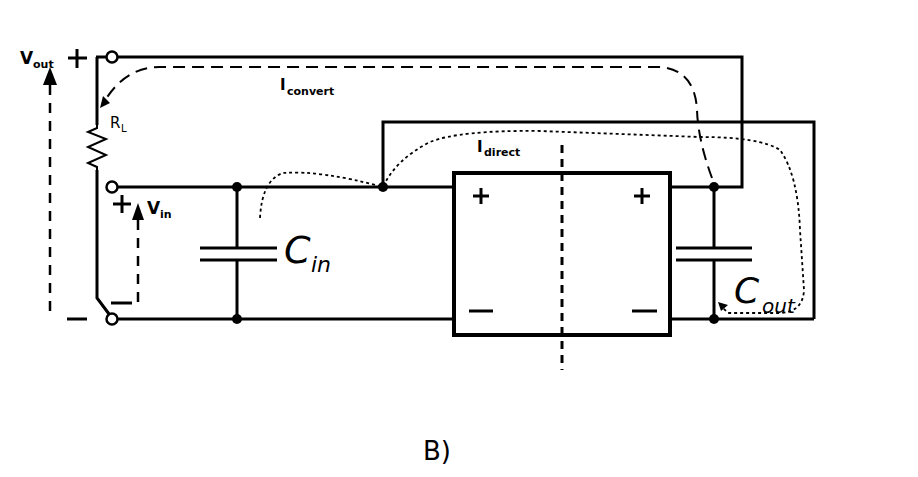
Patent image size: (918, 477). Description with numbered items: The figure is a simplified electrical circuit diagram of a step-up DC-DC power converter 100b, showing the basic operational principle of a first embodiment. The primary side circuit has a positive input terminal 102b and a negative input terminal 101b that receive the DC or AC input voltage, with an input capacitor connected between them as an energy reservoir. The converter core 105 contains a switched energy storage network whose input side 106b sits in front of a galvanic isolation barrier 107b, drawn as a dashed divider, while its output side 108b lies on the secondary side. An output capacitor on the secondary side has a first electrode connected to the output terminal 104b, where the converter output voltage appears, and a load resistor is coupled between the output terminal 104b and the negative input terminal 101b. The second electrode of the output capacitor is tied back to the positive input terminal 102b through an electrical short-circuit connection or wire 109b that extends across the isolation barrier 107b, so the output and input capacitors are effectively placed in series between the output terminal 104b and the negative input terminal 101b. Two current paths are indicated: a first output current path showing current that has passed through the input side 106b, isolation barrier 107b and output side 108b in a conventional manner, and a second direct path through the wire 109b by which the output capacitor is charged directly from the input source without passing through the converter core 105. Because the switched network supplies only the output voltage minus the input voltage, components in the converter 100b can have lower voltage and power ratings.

The step-up DC-DC power converter 100b is at (255, 374).
The negative input terminal 101b is at (150, 338).
The positive input terminal 102b is at (147, 170).
The output terminal 104b is at (75, 38).
The converter core 105 is at (587, 282).
The input side of the switched energy storage network 106b is at (502, 249).
The galvanic isolation barrier 107b is at (515, 276).
The output side of the switched energy storage network 108b is at (617, 249).
The electrical short-circuit connection or wire 109b is at (598, 205).